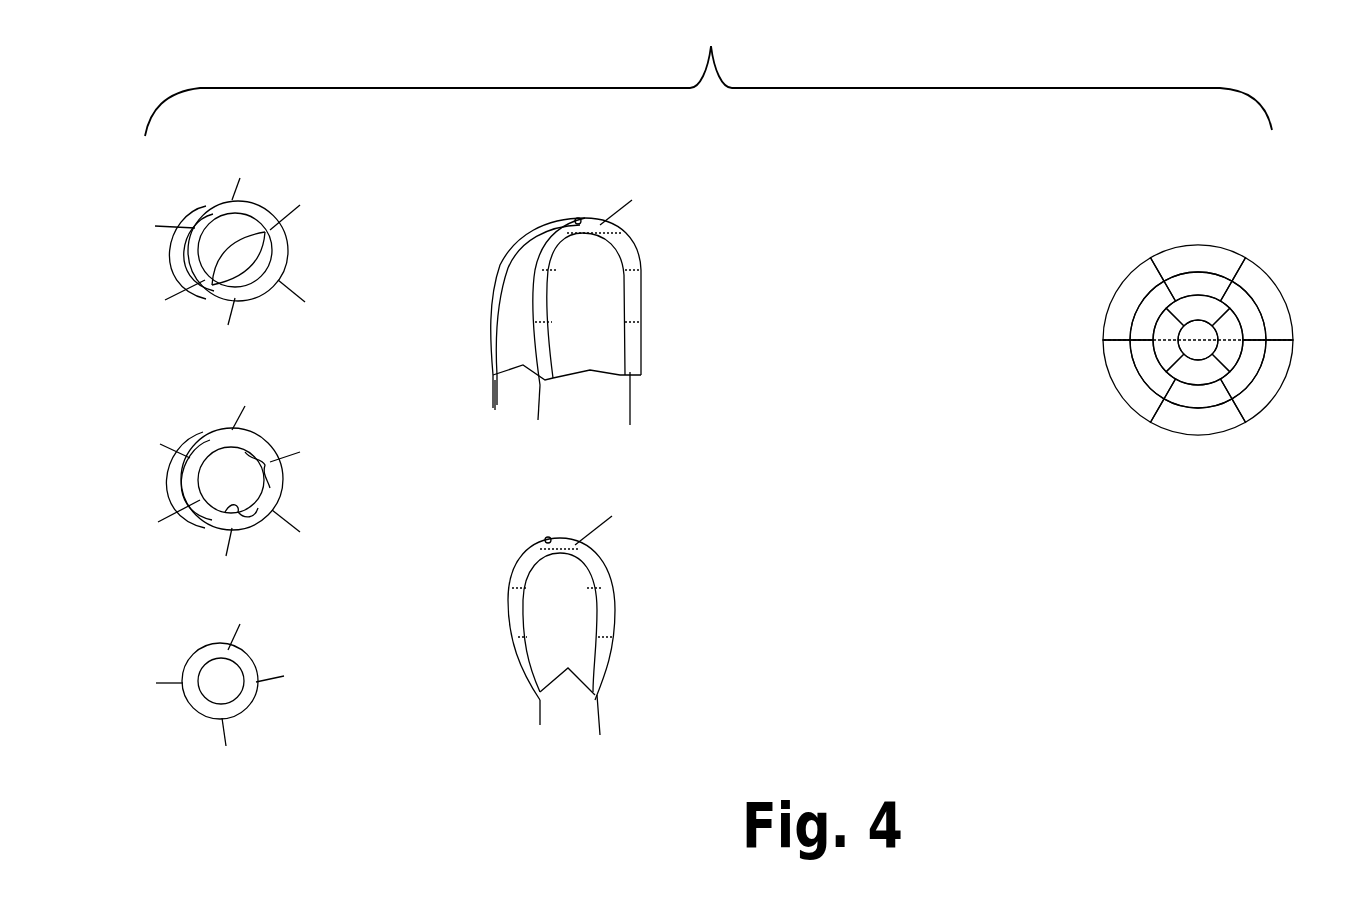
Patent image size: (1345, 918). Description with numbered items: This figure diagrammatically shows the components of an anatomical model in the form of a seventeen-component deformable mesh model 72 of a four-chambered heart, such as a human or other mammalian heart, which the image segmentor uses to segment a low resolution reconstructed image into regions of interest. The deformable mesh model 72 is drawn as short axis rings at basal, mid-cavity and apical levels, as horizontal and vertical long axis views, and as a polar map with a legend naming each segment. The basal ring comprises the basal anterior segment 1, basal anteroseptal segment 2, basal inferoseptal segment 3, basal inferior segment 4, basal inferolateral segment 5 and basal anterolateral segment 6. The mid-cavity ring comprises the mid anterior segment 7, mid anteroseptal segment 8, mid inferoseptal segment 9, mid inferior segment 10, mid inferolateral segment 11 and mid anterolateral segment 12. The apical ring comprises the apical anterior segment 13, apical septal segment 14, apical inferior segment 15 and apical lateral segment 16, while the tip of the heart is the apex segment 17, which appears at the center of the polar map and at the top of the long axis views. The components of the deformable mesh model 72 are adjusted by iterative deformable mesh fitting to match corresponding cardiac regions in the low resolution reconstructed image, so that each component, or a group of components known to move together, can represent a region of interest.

The deformable mesh model 72 is at (695, 412).
The basal anterior segment 1 is at (1198, 263).
The basal anteroseptal segment 2 is at (1133, 299).
The basal inferoseptal segment 3 is at (1133, 381).
The basal inferior segment 4 is at (1198, 417).
The basal inferolateral segment 5 is at (1262, 381).
The basal anterolateral segment 6 is at (1262, 299).
The mid anterior segment 7 is at (1198, 286).
The mid anteroseptal segment 8 is at (1153, 310).
The mid inferoseptal segment 9 is at (1153, 369).
The mid inferior segment 10 is at (1198, 393).
The mid inferolateral segment 11 is at (1244, 369).
The mid anterolateral segment 12 is at (1244, 310).
The apical anterior segment 13 is at (1198, 310).
The apical septal segment 14 is at (1163, 340).
The apical inferior segment 15 is at (1198, 369).
The apical lateral segment 16 is at (1224, 340).
The apex segment 17 is at (1198, 340).